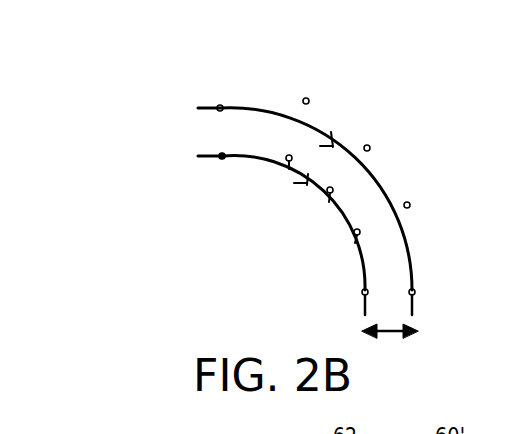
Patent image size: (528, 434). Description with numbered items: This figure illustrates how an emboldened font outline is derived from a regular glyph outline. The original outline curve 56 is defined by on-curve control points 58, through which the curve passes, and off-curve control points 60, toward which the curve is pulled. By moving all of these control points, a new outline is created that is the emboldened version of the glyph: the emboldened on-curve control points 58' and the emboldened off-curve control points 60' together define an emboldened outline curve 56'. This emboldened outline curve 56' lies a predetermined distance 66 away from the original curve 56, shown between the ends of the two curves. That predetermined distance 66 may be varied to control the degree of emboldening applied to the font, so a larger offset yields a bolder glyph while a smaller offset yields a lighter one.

The outline curve 56 is at (248, 222).
The emboldened outline curve 56' is at (344, 199).
The on-curve control points 58 is at (253, 252).
The emboldened on-curve control points 58' is at (357, 176).
The off-curve control points 60 is at (298, 214).
The emboldened off-curve control points 60' is at (382, 127).
The predetermined distance 66 is at (390, 342).